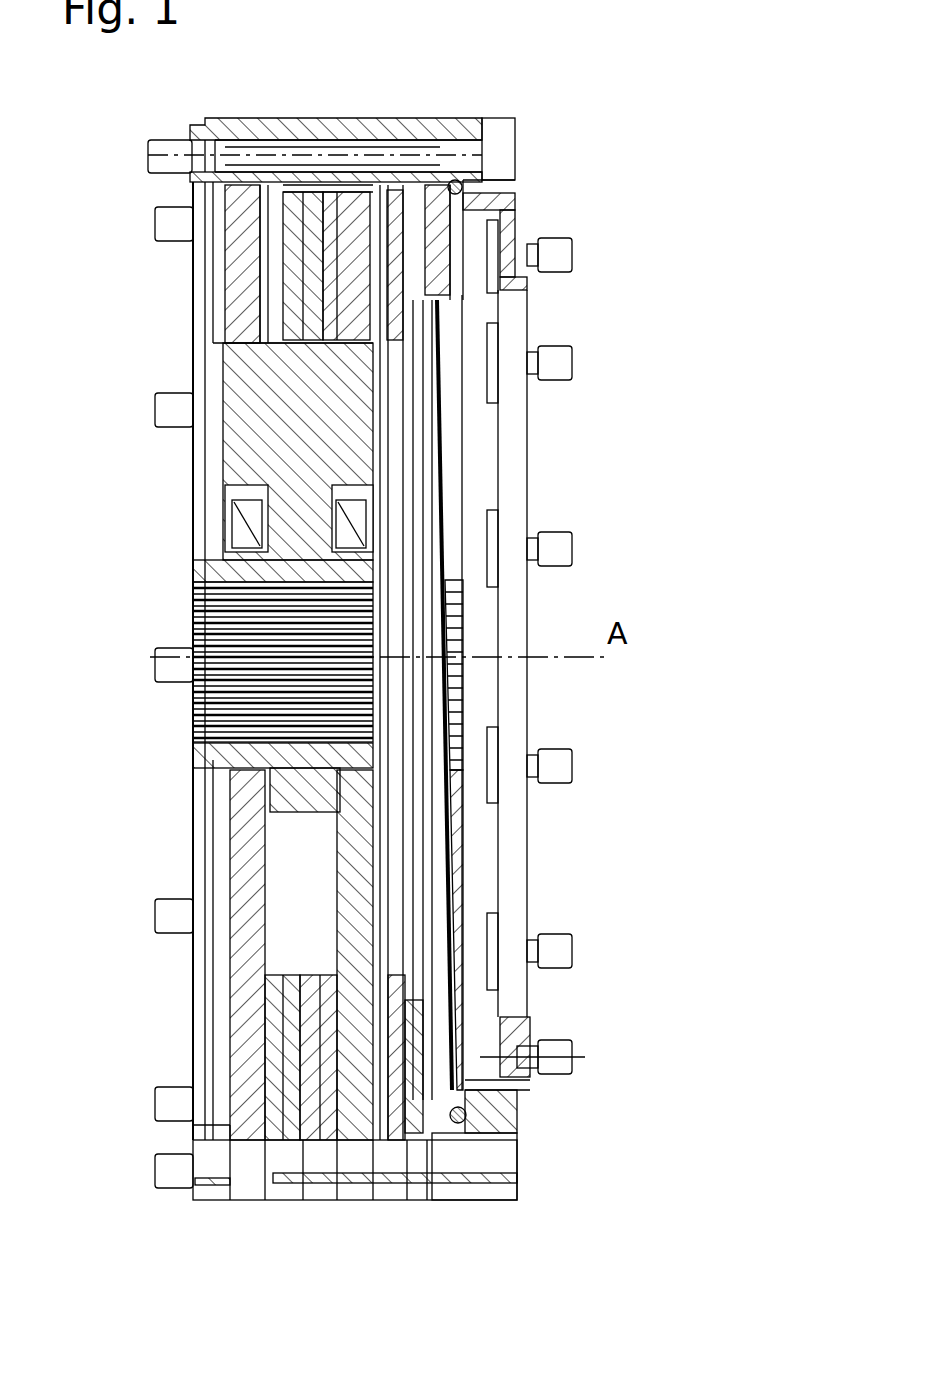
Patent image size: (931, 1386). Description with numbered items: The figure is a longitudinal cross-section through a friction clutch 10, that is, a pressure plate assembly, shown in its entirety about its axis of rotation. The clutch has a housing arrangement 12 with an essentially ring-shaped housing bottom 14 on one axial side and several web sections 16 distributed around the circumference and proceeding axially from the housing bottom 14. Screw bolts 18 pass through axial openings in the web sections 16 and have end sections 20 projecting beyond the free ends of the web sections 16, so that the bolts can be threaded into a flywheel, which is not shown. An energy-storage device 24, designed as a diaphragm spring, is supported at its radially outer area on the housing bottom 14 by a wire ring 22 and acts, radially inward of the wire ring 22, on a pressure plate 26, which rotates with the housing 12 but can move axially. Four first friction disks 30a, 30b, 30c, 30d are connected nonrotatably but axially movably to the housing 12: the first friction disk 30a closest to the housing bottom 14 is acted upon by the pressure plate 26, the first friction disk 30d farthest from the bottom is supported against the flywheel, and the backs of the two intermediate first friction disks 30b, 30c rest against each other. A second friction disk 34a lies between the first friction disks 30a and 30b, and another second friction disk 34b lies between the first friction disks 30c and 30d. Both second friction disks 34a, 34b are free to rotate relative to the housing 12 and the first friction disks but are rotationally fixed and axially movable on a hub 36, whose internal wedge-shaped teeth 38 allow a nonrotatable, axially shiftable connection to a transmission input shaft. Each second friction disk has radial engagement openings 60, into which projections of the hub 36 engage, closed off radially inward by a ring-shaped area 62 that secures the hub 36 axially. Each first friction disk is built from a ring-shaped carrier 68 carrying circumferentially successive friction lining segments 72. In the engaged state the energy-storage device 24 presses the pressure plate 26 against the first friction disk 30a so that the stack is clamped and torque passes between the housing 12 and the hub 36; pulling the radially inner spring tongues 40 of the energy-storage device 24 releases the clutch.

The friction clutch 10 is at (550, 108).
The housing arrangement 12 is at (458, 120).
The housing bottom 14 is at (515, 195).
The web sections 16 is at (247, 128).
The screw bolts 18 is at (410, 148).
The end sections 20 is at (170, 150).
The wire ring 22 is at (462, 1110).
The energy-storage device 24 is at (435, 915).
The pressure plate 26 is at (412, 530).
The first friction disk 30a is at (405, 1115).
The first friction disk 30b is at (325, 205).
The first friction disk 30c is at (290, 205).
The first friction disk 30d is at (203, 1118).
The second friction disk 34a is at (355, 1100).
The second friction disk 34b is at (248, 1105).
The hub 36 is at (255, 432).
The internal wedge-shaped teeth 38 is at (196, 716).
The spring tongues 40 is at (450, 698).
The engagement openings 60 is at (240, 498).
The ring-shaped area 62 is at (230, 545).
The ring-shaped carrier 68 is at (195, 212).
The friction lining segments 72 is at (216, 265).